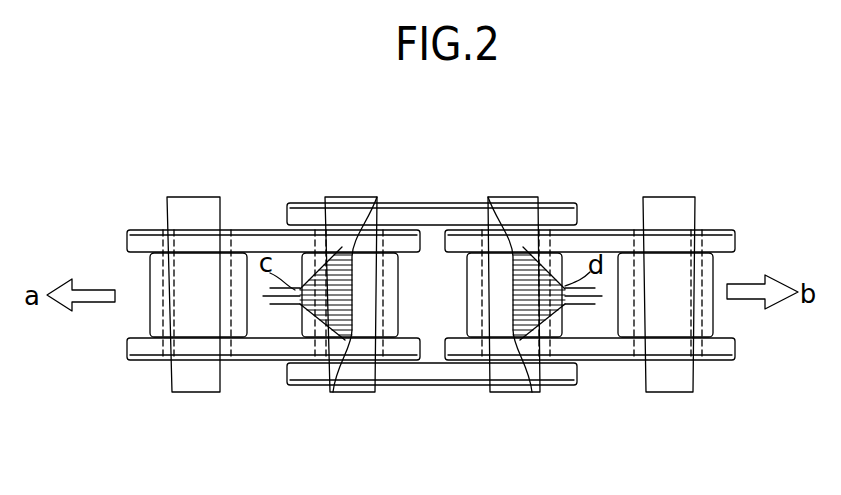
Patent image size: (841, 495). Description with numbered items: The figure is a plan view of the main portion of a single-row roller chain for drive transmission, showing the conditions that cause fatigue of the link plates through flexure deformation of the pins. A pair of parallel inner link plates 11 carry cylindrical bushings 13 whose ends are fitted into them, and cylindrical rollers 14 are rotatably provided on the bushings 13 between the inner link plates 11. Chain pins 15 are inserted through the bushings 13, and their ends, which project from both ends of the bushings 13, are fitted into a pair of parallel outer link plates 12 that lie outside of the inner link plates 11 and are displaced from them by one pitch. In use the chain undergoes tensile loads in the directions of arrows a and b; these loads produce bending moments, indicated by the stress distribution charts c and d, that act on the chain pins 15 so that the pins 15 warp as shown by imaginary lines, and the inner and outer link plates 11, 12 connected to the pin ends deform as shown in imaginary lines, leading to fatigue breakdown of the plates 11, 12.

The inner link plate 11 is at (132, 232).
The outer link plate 12 is at (387, 213).
The cylindrical bushing 13 is at (165, 305).
The cylindrical roller 14 is at (157, 283).
The chain pin 15 is at (199, 215).